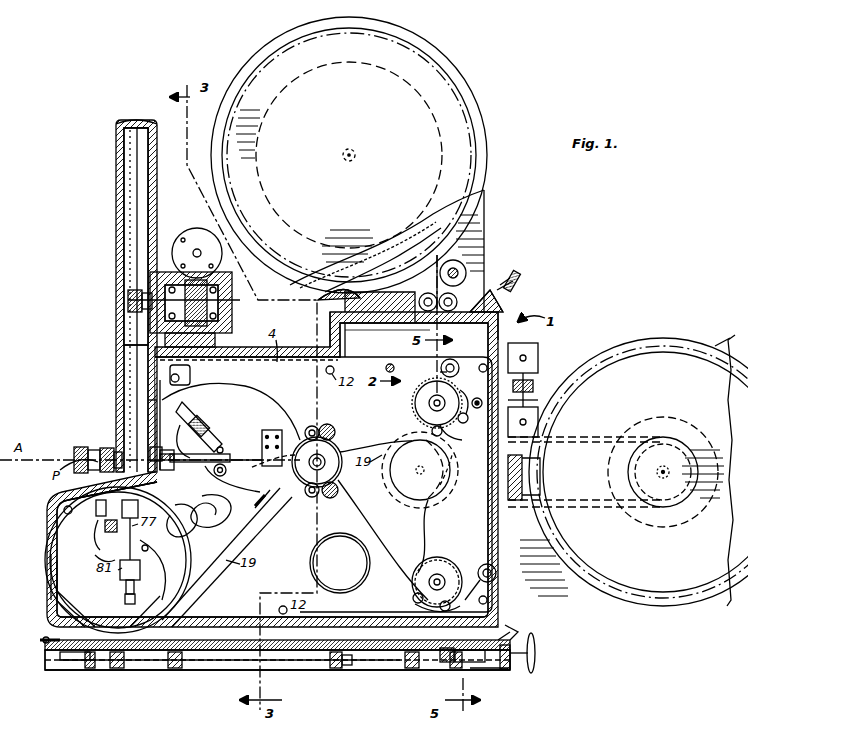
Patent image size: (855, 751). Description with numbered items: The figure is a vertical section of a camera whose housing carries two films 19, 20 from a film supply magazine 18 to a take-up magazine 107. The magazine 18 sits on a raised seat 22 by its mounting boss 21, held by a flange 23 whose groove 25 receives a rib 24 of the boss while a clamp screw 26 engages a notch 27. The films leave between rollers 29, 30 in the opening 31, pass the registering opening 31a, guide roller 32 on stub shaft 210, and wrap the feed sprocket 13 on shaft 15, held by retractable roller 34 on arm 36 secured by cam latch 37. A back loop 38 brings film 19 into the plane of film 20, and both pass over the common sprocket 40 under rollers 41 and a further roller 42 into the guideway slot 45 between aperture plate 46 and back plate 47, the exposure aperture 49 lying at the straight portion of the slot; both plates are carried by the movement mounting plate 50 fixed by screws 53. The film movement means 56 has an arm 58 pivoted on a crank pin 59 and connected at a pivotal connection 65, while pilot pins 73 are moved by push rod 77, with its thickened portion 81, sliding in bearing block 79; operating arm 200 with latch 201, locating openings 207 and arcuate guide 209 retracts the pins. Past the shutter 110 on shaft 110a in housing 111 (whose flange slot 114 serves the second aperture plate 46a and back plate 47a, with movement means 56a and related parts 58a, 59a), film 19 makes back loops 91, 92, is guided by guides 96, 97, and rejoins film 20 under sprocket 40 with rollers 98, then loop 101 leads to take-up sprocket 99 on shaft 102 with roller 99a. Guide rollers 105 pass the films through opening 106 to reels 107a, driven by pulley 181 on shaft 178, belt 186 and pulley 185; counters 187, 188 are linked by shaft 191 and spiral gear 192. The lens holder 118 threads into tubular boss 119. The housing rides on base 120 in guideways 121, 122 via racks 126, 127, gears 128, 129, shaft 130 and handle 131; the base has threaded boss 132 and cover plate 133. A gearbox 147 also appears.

The feed sprocket 13 is at (418, 412).
The shaft 15 is at (418, 400).
The film supply magazine 18 is at (477, 145).
The film 19 is at (470, 218).
The film 20 is at (374, 450).
The mounting boss 21 is at (372, 323).
The raised seat 22 is at (388, 333).
The flange 23 is at (496, 300).
The rib 24 is at (340, 292).
The groove 25 is at (330, 318).
The clamp screw 26 is at (512, 283).
The notch 27 is at (504, 313).
The roller 29 is at (428, 292).
The roller 30 is at (466, 272).
The opening 31 is at (452, 312).
The registering opening 31a is at (418, 322).
The guide roller 32 is at (455, 362).
The retractable roller 34 is at (442, 436).
The arm 36 is at (469, 416).
The cam latch 37 is at (478, 398).
The back loop 38 is at (423, 518).
The common sprocket 40 is at (312, 437).
The retractable rollers 41 is at (316, 428).
The pressure roller 42 is at (335, 438).
The guideway slot 45 is at (150, 408).
The aperture plate 46 is at (157, 400).
The aperture plate 46a is at (70, 494).
The back plate 47 is at (186, 373).
The back plate 47a is at (64, 508).
The aperture 49 is at (173, 464).
The movement mounting plate 50 is at (238, 546).
The screws 53 is at (264, 502).
The film movement means 56 is at (225, 436).
The film movement means 56a is at (104, 555).
The arm 58 is at (200, 422).
The lever 58a is at (96, 512).
The crank pin 59 is at (208, 428).
The pad 59a is at (105, 530).
The pivotal connection 65 is at (224, 449).
The pilot pins 73 is at (152, 450).
The push rod 77 is at (200, 464).
The bearing block 79 is at (282, 452).
The thickened portion 81 is at (228, 472).
The back loop 91 is at (215, 518).
The back loop 92 is at (190, 536).
The guide 96 is at (52, 582).
The guide 97 is at (55, 572).
The retractable rollers 98 is at (312, 497).
The take-up sprocket 99 is at (430, 568).
The retractable roller 99a is at (413, 600).
The back loop 101 is at (340, 560).
The shaft 102 is at (428, 586).
The guide rollers 105 is at (485, 563).
The opening 106 is at (496, 560).
The take-up magazine 107 is at (655, 348).
The reels 107a is at (710, 348).
The shutter 110 is at (130, 355).
The shaft 110a is at (128, 301).
The housing 111 is at (130, 122).
The slot 114 is at (130, 213).
The lens holder 118 is at (80, 446).
The tubular boss 119 is at (108, 446).
The base 120 is at (200, 655).
The guideway 121 is at (44, 641).
The guideway 122 is at (506, 668).
The rack 126 is at (92, 648).
The rack 127 is at (445, 660).
The gear 128 is at (90, 660).
The gear 129 is at (468, 672).
The shaft 130 is at (155, 664).
The manual operating handle 131 is at (537, 655).
The threaded boss 132 is at (334, 668).
The plate 133 is at (228, 672).
The gearbox 147 is at (205, 300).
The shaft 178 is at (455, 462).
The pulley 181 is at (460, 478).
The pulley 185 is at (672, 438).
The belt 186 is at (555, 436).
The counter 187 is at (540, 356).
The counter 188 is at (538, 420).
The shaft 191 is at (545, 398).
The spiral gear 192 is at (536, 382).
The operating arm 200 is at (155, 565).
The releasable latch 201 is at (150, 548).
The locating openings 207 is at (148, 577).
The arcuate guide 209 is at (268, 515).
The stub shaft 210 is at (440, 372).